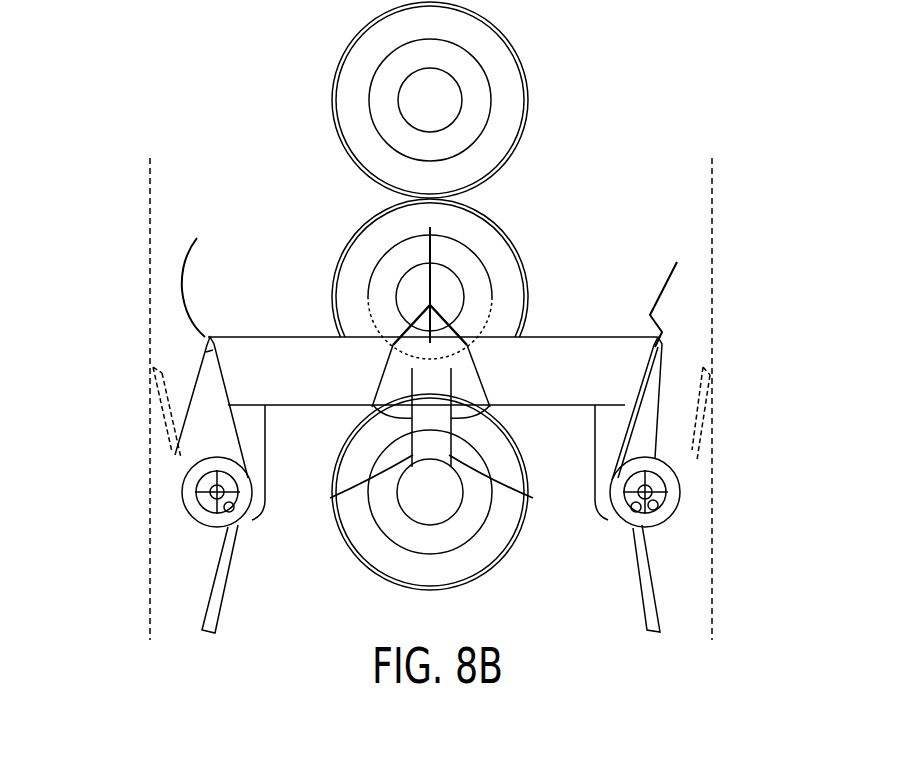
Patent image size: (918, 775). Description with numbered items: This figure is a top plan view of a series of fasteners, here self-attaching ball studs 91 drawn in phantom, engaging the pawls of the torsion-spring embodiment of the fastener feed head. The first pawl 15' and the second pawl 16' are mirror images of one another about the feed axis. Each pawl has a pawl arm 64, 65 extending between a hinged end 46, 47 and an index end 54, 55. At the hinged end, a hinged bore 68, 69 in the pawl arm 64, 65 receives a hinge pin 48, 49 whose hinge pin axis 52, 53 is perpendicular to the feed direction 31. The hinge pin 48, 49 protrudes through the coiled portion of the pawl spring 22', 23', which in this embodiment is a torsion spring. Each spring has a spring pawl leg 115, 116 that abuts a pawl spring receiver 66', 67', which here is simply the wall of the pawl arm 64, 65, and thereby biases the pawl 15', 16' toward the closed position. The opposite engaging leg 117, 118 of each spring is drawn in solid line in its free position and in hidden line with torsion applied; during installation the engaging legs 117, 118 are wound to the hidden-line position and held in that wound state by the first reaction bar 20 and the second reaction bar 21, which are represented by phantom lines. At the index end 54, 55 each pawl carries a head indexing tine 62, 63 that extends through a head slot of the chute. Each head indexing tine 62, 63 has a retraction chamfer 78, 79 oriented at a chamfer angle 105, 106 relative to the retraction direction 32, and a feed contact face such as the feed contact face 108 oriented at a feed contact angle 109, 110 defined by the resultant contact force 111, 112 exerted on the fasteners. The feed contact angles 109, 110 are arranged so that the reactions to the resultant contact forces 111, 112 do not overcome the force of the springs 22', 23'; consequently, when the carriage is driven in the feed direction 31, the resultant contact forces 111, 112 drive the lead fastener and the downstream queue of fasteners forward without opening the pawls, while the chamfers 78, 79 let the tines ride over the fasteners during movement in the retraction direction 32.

The first reaction bar 20 is at (148, 195).
The second reaction bar 21 is at (712, 196).
The self-attaching ball stud 91 is at (438, 92).
The feed direction 31 is at (432, 252).
The feed contact angle 110 is at (455, 347).
The resultant contact force 111 is at (397, 343).
The resultant contact force 112 is at (463, 343).
The head indexing tine 63 is at (500, 343).
The head indexing tine 62 is at (320, 352).
The index end 54 is at (275, 352).
The index end 55 is at (578, 352).
The first pawl 15' is at (212, 315).
The second pawl 16' is at (636, 315).
The feed contact face 108 is at (470, 352).
The feed contact angle 109 is at (390, 380).
The retraction chamfer 78 is at (373, 403).
The retraction chamfer 79 is at (490, 403).
The pawl arm 64 is at (198, 388).
The pawl arm 65 is at (657, 443).
The spring pawl leg 115 is at (203, 345).
The spring pawl leg 116 is at (662, 338).
The pawl spring receiver 66' is at (212, 277).
The pawl spring receiver 67' is at (653, 294).
The hinge pin 48 is at (202, 487).
The hinge pin 49 is at (652, 508).
The hinge pin axis 52 is at (212, 497).
The hinge pin axis 53 is at (652, 492).
The hinged end 46 is at (192, 525).
The hinged end 47 is at (657, 520).
The hinged bore 68 is at (234, 512).
The hinged bore 69 is at (633, 510).
The engaging leg 117 is at (222, 598).
The engaging leg 118 is at (645, 612).
The pawl spring 22' is at (160, 417).
The pawl spring 23' is at (680, 410).
The retraction direction 32 is at (336, 496).
The chamfer angle 105 is at (393, 420).
The chamfer angle 106 is at (469, 420).